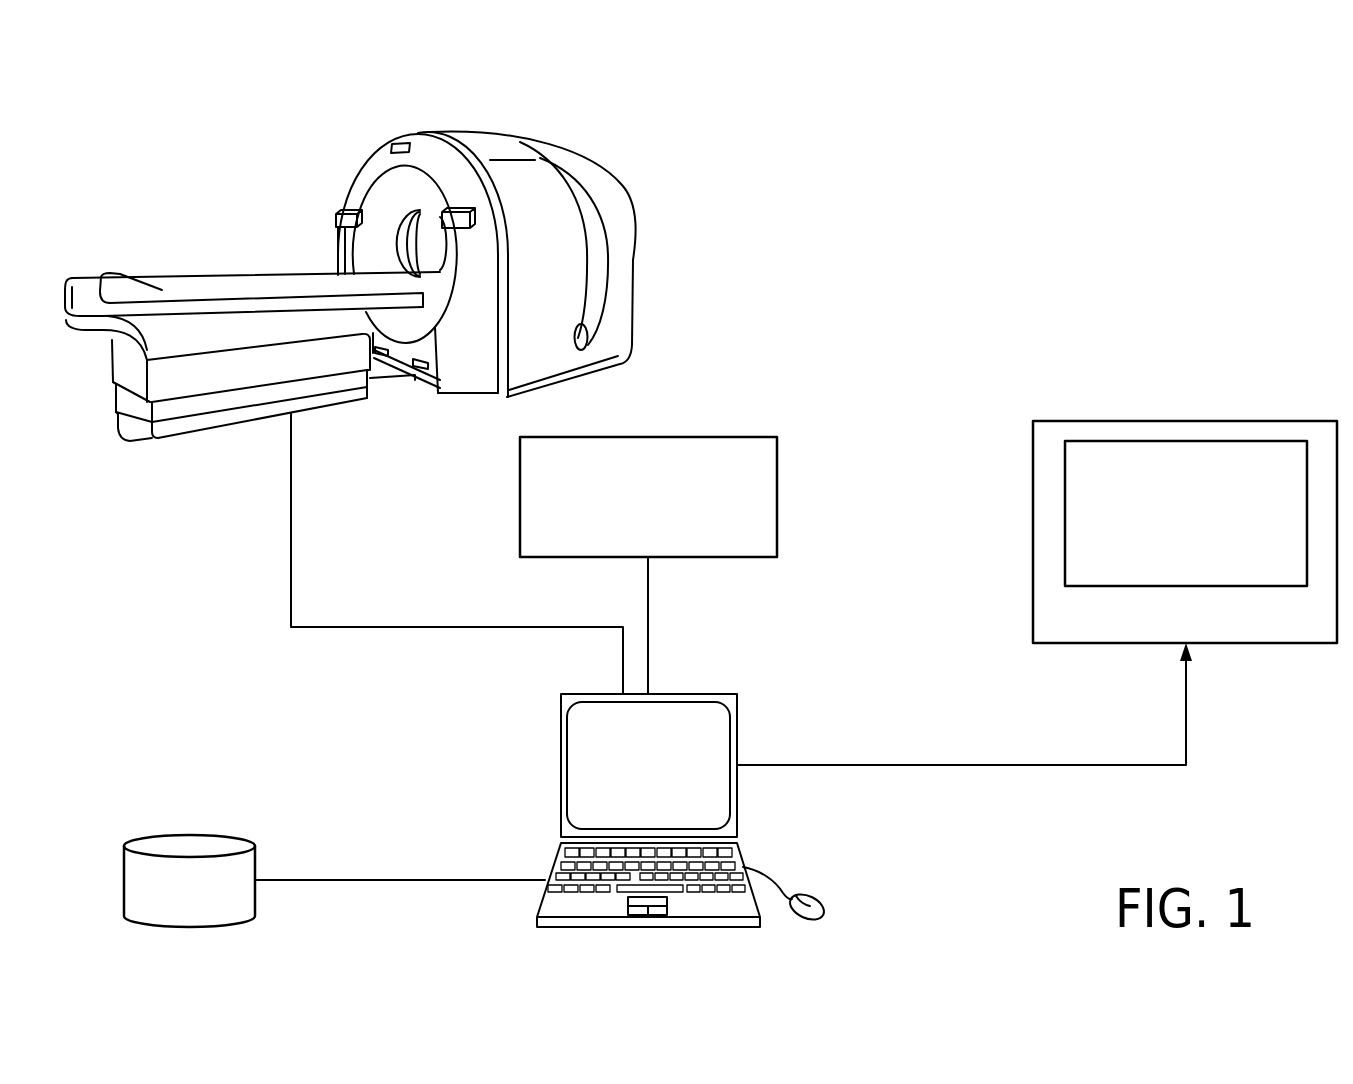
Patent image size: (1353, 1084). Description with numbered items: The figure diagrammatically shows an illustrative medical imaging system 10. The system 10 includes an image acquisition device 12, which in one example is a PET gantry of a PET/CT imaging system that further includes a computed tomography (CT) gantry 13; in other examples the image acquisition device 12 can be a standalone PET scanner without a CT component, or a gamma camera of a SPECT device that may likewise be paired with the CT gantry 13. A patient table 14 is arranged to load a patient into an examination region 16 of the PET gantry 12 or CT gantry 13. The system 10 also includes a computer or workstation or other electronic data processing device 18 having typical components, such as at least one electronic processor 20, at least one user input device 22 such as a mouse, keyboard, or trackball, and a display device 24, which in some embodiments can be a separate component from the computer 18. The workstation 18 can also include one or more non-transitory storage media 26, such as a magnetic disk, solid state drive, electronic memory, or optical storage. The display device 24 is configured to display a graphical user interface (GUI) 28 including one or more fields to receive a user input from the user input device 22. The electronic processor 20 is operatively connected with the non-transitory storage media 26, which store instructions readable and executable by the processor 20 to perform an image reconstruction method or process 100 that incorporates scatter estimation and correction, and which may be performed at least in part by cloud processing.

The medical imaging system 10 is at (1270, 237).
The image acquisition device 12 is at (600, 184).
The computed tomography (CT) gantry 13 is at (485, 136).
The patient table 14 is at (212, 261).
The examination region 16 is at (395, 238).
The electronic data processing device 18 is at (540, 709).
The electronic processor 20 is at (557, 788).
The user input device 22 is at (824, 909).
The display device 24 is at (1172, 628).
The non-transitory storage media 26 is at (176, 901).
The graphical user interface (GUI) 28 is at (1172, 522).
The image reconstruction method or process 100 is at (628, 542).